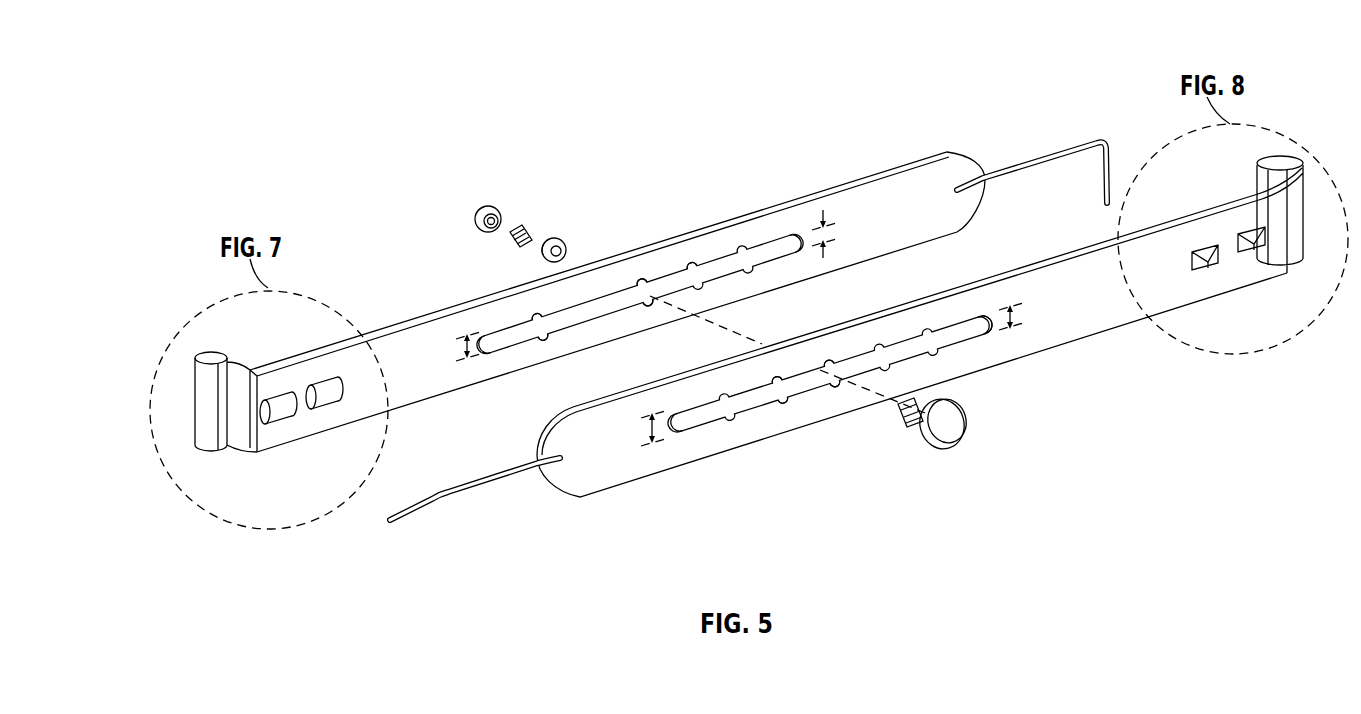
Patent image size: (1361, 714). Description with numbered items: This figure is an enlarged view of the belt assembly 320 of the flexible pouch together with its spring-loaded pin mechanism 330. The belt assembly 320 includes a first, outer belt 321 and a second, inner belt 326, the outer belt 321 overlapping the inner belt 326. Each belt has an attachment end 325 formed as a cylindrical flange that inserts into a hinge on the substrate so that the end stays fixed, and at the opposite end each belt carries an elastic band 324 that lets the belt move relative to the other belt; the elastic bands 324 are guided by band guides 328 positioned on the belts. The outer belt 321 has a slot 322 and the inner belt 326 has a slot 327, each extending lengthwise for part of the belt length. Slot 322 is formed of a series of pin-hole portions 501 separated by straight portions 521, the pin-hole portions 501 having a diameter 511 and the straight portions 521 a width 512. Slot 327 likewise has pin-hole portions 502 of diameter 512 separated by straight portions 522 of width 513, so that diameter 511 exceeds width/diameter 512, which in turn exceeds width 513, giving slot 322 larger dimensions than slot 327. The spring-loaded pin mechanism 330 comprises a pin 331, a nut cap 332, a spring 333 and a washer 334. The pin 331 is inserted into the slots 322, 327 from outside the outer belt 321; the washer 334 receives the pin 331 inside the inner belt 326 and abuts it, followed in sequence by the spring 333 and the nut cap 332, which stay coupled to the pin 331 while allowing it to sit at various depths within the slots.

The belt assembly 320 is at (172, 165).
The first (outer) belt 321 is at (665, 477).
The slot 322 is at (968, 323).
The elastic band 324 is at (481, 480).
The attachment end 325 is at (212, 357).
The second (inner) belt 326 is at (838, 181).
The slot 327 is at (714, 258).
The band guide 328 is at (327, 398).
The spring-loaded pin mechanism 330 is at (487, 193).
The pin 331 is at (947, 428).
The nut cap 332 is at (476, 214).
The spring 333 is at (509, 236).
The washer 334 is at (543, 258).
The pin-hole portion 501 is at (732, 395).
The pin-hole portion 502 is at (593, 298).
The diameter 511 is at (647, 430).
The width/diameter 512 is at (458, 347).
The width 513 is at (829, 216).
The straight portion 521 is at (858, 352).
The straight portion 522 is at (668, 278).